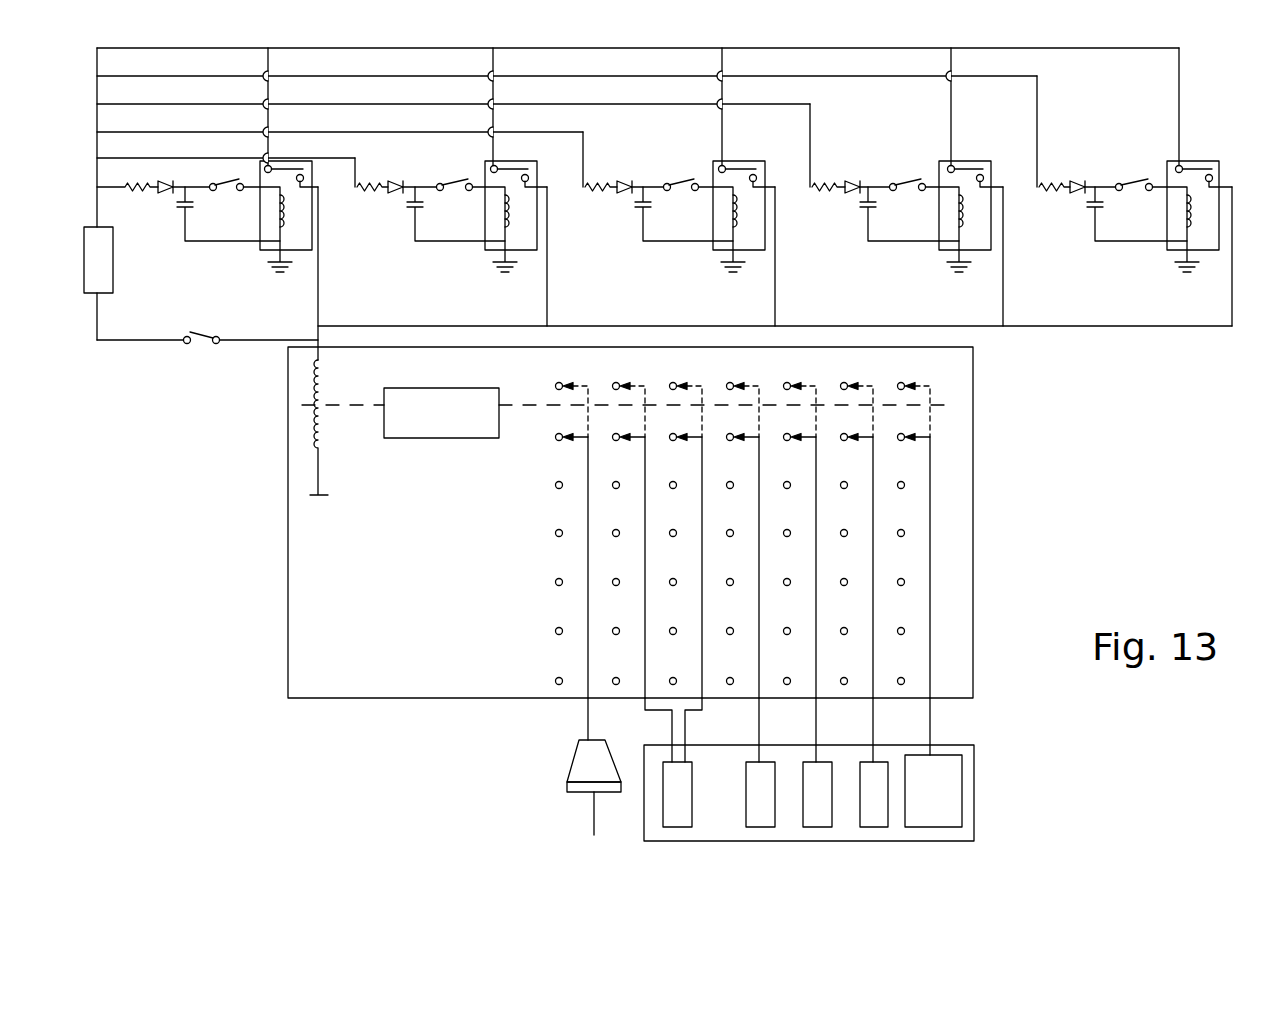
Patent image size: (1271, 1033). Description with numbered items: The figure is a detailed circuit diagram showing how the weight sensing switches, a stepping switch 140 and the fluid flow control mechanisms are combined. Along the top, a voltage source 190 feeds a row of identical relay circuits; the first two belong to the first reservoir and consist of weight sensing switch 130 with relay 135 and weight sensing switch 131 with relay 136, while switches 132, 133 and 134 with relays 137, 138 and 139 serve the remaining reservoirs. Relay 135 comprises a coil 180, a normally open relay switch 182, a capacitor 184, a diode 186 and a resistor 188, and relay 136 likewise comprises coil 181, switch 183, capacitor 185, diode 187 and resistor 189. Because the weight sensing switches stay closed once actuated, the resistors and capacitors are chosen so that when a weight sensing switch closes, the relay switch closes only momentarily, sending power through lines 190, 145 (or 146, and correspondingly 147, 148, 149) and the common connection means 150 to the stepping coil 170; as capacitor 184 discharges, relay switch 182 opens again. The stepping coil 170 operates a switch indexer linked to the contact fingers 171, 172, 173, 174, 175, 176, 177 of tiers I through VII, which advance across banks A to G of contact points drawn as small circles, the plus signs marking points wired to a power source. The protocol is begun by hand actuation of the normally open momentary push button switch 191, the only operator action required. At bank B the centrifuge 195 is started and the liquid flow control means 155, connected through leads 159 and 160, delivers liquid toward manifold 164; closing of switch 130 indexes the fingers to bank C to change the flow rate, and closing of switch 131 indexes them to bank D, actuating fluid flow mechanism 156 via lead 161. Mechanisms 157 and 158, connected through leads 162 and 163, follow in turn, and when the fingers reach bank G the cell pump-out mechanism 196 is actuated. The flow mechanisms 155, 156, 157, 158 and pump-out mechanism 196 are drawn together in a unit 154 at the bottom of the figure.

The source 190 is at (207, 47).
The momentary control push button switch 191 is at (190, 350).
The weight sensing switch 130 is at (212, 181).
The weight sensing switch 131 is at (440, 181).
The switch 132 is at (681, 192).
The switch 133 is at (908, 192).
The switch 134 is at (1130, 191).
The relay 135 is at (281, 176).
The relay 136 is at (514, 160).
The relay 137 is at (723, 248).
The relay 138 is at (940, 249).
The relay 139 is at (1168, 249).
The coil 180 is at (288, 226).
The coil 181 is at (509, 227).
The relay switch 182 is at (304, 174).
The relay switch 183 is at (513, 181).
The capacitor 184 is at (193, 208).
The capacitor 185 is at (423, 208).
The diode 186 is at (165, 196).
The diode 187 is at (397, 198).
The resistor 188 is at (127, 202).
The resistor 189 is at (370, 202).
The connecting lead 145 is at (320, 307).
The connecting lead 146 is at (547, 303).
The connecting lead 147 is at (775, 305).
The connecting lead 148 is at (1003, 302).
The connecting lead 149 is at (1232, 299).
The common connection means 150 is at (1068, 327).
The stepping switch 140 is at (663, 522).
The stepping coil 170 is at (325, 430).
The contact finger 171 is at (588, 458).
The contact finger 172 is at (645, 458).
The contact finger 173 is at (702, 458).
The contact finger 174 is at (759, 458).
The contact finger 175 is at (816, 458).
The contact finger 176 is at (873, 458).
The contact finger 177 is at (930, 458).
The lead 159 is at (646, 710).
The lead 160 is at (704, 710).
The lead 161 is at (759, 717).
The lead 162 is at (816, 717).
The lead 163 is at (873, 717).
The manifold 164 is at (930, 717).
The centrifuge 195 is at (580, 767).
The cell pump-out mechanism 196 is at (953, 768).
The display unit 154 is at (838, 807).
The liquid flow control means 155 is at (675, 818).
The fluid flow mechanism 156 is at (753, 818).
The fluid flow mechanism 157 is at (812, 818).
The fluid flow mechanism 158 is at (870, 818).